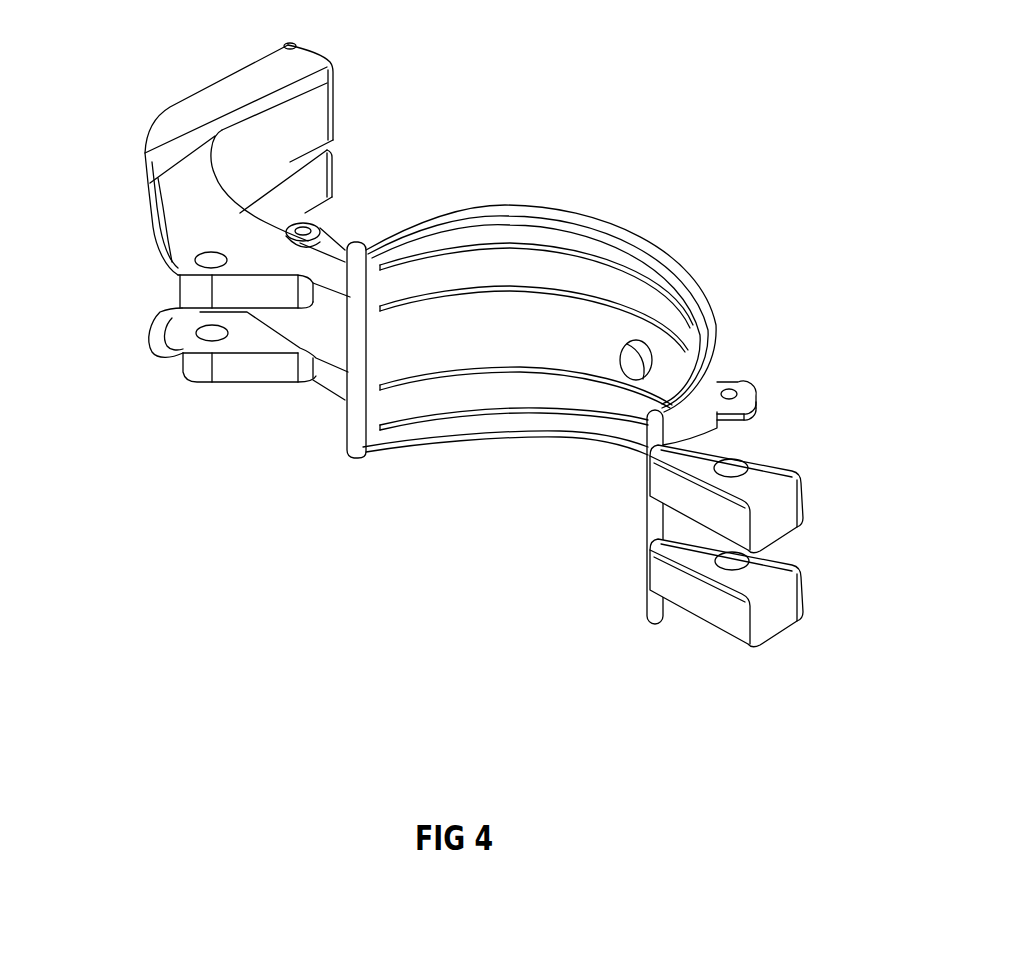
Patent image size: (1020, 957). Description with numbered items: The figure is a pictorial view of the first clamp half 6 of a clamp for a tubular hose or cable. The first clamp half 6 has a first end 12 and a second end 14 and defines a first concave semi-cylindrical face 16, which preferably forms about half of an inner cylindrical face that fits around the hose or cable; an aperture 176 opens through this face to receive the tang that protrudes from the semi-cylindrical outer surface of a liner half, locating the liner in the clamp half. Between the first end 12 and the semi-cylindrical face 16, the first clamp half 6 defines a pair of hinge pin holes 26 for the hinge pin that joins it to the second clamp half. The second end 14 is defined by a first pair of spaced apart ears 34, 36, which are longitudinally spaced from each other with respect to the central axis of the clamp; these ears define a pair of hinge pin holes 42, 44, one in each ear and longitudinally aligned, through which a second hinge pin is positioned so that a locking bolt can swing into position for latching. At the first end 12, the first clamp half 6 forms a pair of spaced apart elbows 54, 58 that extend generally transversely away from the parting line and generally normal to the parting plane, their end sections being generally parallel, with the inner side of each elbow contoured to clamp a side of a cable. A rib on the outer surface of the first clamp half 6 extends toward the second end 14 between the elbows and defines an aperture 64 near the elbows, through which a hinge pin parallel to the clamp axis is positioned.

The first clamp half 6 is at (525, 338).
The first end 12 is at (236, 215).
The second end 14 is at (763, 483).
The first concave semi-cylindrical face 16 is at (535, 338).
The hinge pin holes 26 is at (184, 337).
The ear 34 is at (776, 406).
The ear 36 is at (745, 623).
The hinge pin hole 42 is at (874, 272).
The hinge pin hole 44 is at (686, 629).
The elbow 54 is at (262, 213).
The elbow 58 is at (230, 150).
The aperture 64 is at (318, 231).
The aperture 176 is at (480, 506).